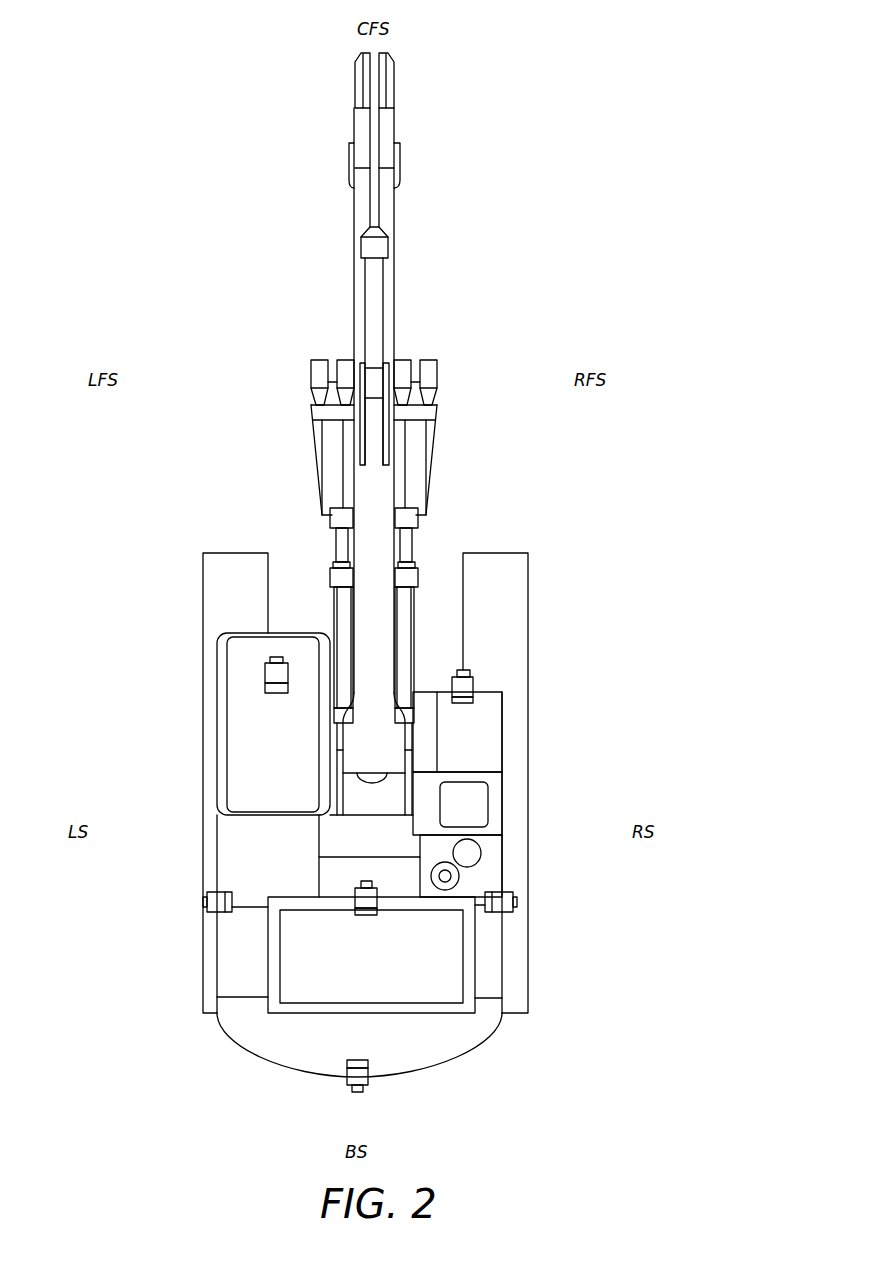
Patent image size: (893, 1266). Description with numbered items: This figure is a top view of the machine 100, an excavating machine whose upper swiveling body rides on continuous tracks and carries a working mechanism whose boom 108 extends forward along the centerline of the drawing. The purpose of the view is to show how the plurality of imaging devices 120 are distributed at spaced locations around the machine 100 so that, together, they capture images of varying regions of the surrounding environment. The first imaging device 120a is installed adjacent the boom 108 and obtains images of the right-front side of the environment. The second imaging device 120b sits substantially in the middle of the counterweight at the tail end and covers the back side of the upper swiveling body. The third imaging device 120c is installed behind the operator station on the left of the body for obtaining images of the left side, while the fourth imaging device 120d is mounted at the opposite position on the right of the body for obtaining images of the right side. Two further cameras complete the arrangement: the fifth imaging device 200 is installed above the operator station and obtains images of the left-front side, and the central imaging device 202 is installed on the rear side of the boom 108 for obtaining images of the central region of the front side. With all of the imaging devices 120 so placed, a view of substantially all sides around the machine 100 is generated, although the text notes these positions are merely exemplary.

The machine 100 is at (618, 78).
The boom 108 is at (354, 272).
The imaging devices 120 is at (410, 1106).
The first imaging device 120a is at (473, 683).
The second imaging device 120b is at (357, 1092).
The third imaging device 120c is at (207, 892).
The fourth imaging device 120d is at (517, 903).
The fifth imaging device 200 is at (265, 675).
The central imaging device 202 is at (365, 915).